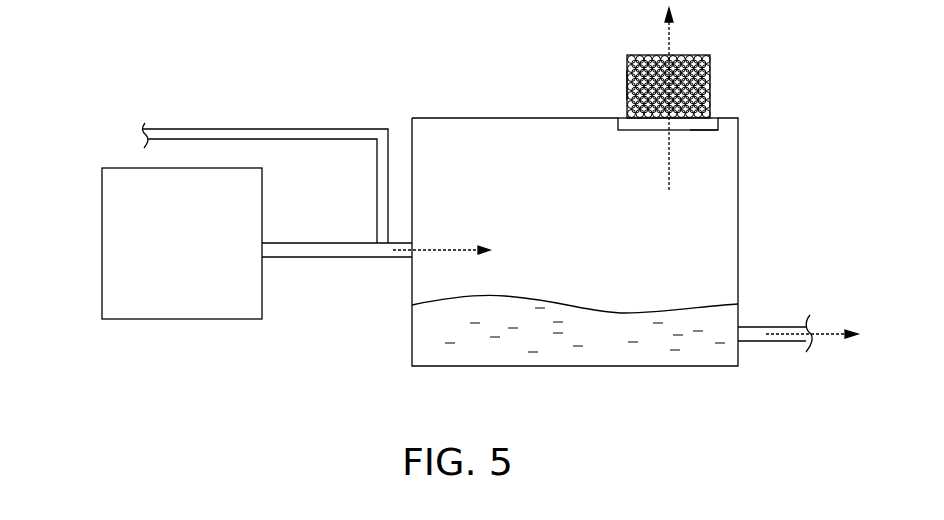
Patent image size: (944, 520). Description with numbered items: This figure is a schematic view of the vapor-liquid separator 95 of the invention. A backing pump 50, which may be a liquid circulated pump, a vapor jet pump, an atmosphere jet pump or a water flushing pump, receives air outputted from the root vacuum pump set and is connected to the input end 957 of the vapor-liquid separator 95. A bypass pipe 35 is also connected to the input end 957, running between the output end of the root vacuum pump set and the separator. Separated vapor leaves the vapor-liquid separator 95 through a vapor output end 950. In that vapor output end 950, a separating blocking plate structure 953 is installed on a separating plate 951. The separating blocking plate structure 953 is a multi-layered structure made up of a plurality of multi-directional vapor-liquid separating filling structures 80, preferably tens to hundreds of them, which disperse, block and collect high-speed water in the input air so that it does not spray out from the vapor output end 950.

The bypass pipe 35 is at (263, 128).
The backing pump 50 is at (101, 203).
The multi-directional vapor-liquid separating filling structure 80 is at (710, 76).
The vapor-liquid separator 95 is at (471, 103).
The vapor output end 950 is at (722, 113).
The separating plate 951 is at (703, 130).
The separating blocking plate structure 953 is at (617, 80).
The input end 957 is at (394, 269).